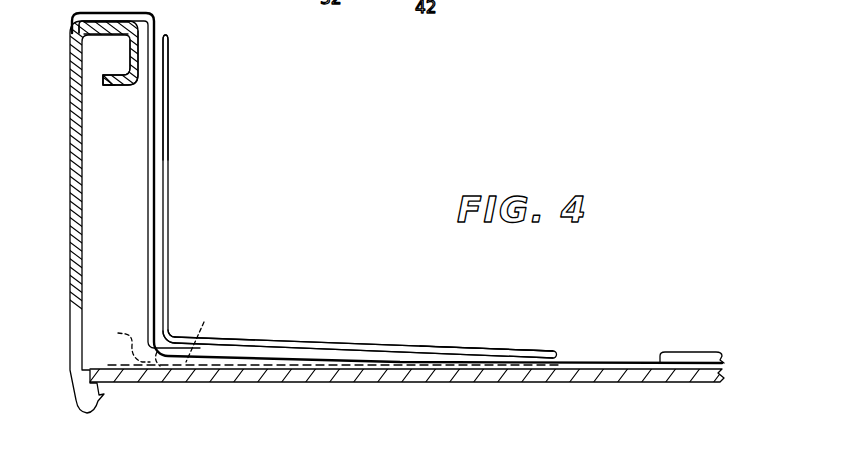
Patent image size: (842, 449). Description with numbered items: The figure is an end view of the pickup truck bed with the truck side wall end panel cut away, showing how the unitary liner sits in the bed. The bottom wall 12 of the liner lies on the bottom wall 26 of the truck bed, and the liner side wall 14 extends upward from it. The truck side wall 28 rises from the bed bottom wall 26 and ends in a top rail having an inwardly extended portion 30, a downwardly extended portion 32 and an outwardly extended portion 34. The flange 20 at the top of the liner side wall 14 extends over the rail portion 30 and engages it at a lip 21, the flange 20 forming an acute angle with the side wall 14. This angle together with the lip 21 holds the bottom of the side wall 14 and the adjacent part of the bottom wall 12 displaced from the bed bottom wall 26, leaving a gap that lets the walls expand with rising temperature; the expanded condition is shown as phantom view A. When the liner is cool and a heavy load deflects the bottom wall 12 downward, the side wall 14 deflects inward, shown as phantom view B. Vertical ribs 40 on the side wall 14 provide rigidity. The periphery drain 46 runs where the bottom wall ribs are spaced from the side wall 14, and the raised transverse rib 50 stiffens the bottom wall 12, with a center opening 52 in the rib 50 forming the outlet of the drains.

The bottom wall 12 is at (342, 340).
The side wall 14 is at (168, 176).
The flange 20 is at (80, 13).
The lip 21 is at (78, 22).
The bottom wall of the bed 26 is at (618, 375).
The side wall 28 is at (68, 152).
The inwardly extended portion 30 is at (110, 27).
The downwardly extended portion 32 is at (137, 59).
The outwardly extended portion 34 is at (118, 80).
The vertical ribs 40 is at (169, 152).
The periphery drain 46 is at (173, 332).
The transverse rib 50 is at (456, 348).
The center opening 52 is at (557, 352).
The phantom view A is at (133, 345).
The phantom view B is at (202, 335).